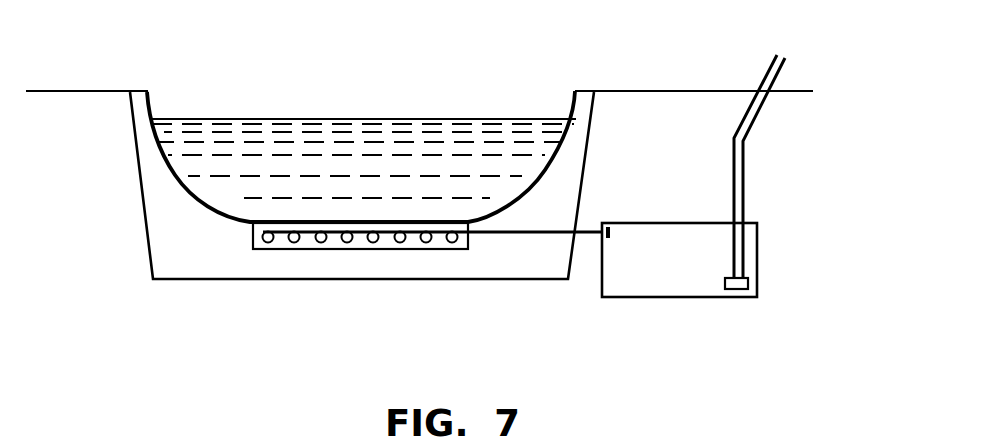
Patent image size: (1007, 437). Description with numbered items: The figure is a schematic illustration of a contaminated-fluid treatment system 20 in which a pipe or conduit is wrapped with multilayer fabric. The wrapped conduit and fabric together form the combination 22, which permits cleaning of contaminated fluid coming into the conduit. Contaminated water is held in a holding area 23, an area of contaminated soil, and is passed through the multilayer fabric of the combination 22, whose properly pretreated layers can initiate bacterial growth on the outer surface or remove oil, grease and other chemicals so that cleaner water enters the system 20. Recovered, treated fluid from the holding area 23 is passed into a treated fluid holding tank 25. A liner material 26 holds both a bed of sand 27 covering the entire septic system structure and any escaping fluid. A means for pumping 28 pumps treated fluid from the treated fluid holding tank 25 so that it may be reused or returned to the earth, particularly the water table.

The system 20 is at (810, 213).
The combination of improved conduit and multilayer fabric 22 is at (295, 240).
The holding area 23 is at (183, 165).
The treated fluid holding tank 25 is at (668, 283).
The liner material 26 is at (508, 278).
The bed of sand 27 is at (462, 245).
The means for pumping 28 is at (757, 279).